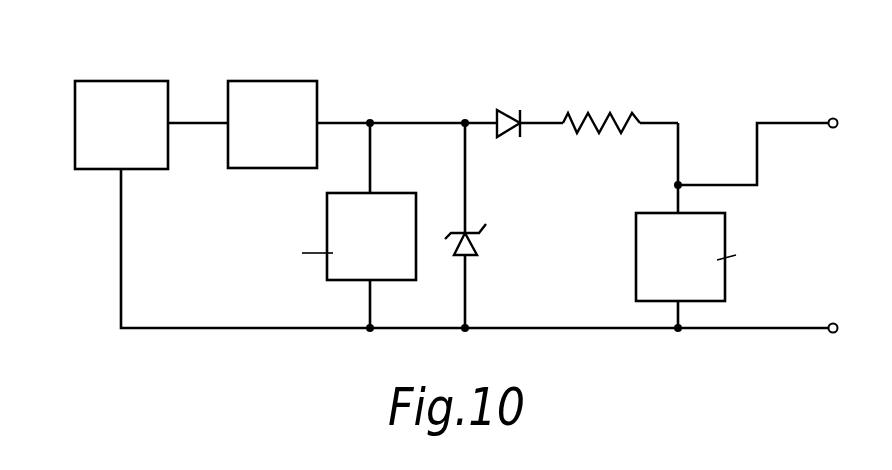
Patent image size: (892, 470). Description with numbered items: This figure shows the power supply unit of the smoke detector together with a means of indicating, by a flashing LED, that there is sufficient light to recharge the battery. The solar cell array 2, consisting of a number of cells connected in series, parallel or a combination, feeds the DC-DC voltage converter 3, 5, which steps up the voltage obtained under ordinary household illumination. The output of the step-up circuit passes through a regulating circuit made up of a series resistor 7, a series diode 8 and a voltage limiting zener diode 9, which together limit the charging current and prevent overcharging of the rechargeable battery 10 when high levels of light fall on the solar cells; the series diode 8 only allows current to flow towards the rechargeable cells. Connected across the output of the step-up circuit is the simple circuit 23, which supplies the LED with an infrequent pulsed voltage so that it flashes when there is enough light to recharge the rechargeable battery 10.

The solar cell array 2 is at (164, 60).
The DC-DC voltage converter 3 is at (301, 106).
The DC-DC voltage converter 5 is at (305, 70).
The simple circuit 23 is at (388, 246).
The series diode 8 is at (503, 110).
The series resistor 7 is at (596, 112).
The voltage limiting zener diode 9 is at (479, 247).
The rechargeable battery 10 is at (696, 270).